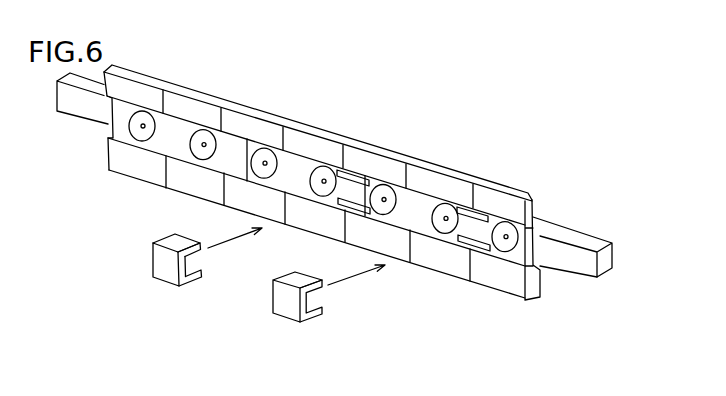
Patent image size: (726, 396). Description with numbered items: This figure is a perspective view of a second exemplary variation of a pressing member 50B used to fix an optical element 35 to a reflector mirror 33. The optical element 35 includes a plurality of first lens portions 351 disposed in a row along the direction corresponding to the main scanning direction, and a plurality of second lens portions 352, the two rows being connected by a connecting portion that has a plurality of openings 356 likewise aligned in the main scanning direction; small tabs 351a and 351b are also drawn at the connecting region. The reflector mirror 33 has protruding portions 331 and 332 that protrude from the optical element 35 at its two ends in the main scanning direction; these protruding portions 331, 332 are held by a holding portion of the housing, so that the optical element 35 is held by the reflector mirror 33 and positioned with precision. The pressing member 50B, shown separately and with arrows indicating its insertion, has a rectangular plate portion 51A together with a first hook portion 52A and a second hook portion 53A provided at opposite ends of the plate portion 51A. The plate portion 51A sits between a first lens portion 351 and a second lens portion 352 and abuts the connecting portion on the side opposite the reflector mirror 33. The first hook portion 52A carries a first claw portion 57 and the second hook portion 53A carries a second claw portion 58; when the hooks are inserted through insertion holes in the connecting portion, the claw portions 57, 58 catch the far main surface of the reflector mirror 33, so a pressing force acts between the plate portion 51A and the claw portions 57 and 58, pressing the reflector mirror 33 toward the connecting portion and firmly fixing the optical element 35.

The reflector mirror 33 is at (576, 265).
The protruding portion 331 is at (85, 110).
The protruding portion 332 is at (573, 260).
The optical element 35 is at (322, 214).
The first lens portion 351 is at (378, 160).
The upper connecting tab 351a is at (477, 218).
The lower connecting tab 351b is at (470, 245).
The second lens portion 352 is at (393, 247).
The opening 356 is at (398, 198).
The pressing member 50B is at (238, 223).
The plate portion 51A is at (160, 262).
The first hook portion 52A is at (173, 240).
The second hook portion 53A is at (193, 282).
The first claw portion 57 is at (201, 252).
The second claw portion 58 is at (200, 260).